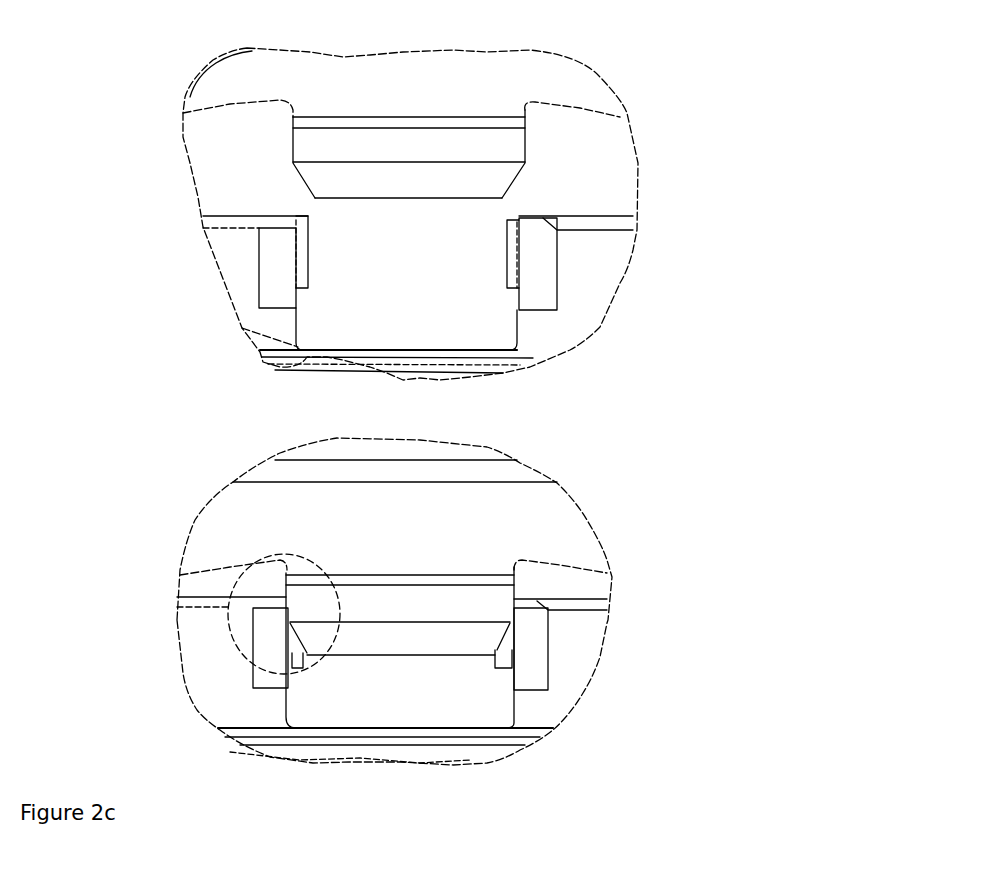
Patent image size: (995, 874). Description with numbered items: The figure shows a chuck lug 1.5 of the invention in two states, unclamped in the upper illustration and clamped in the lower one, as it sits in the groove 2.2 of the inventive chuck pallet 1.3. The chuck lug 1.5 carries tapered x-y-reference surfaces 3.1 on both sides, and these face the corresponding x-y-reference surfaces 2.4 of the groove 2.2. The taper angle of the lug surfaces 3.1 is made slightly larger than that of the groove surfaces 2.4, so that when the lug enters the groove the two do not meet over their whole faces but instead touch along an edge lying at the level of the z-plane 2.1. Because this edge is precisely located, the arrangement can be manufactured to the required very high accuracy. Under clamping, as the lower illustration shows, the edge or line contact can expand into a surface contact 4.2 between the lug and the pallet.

The chuck pallet 1.3 is at (585, 263).
The chuck lug 1.5 is at (485, 178).
The z-plane 2.1 is at (240, 214).
The groove 2.2 is at (428, 326).
The x-y-reference surfaces of the groove 2.4 is at (295, 243).
The tapered x-y-reference surfaces of the chuck lug 3.1 is at (292, 145).
The surface contact 4.2 is at (292, 603).